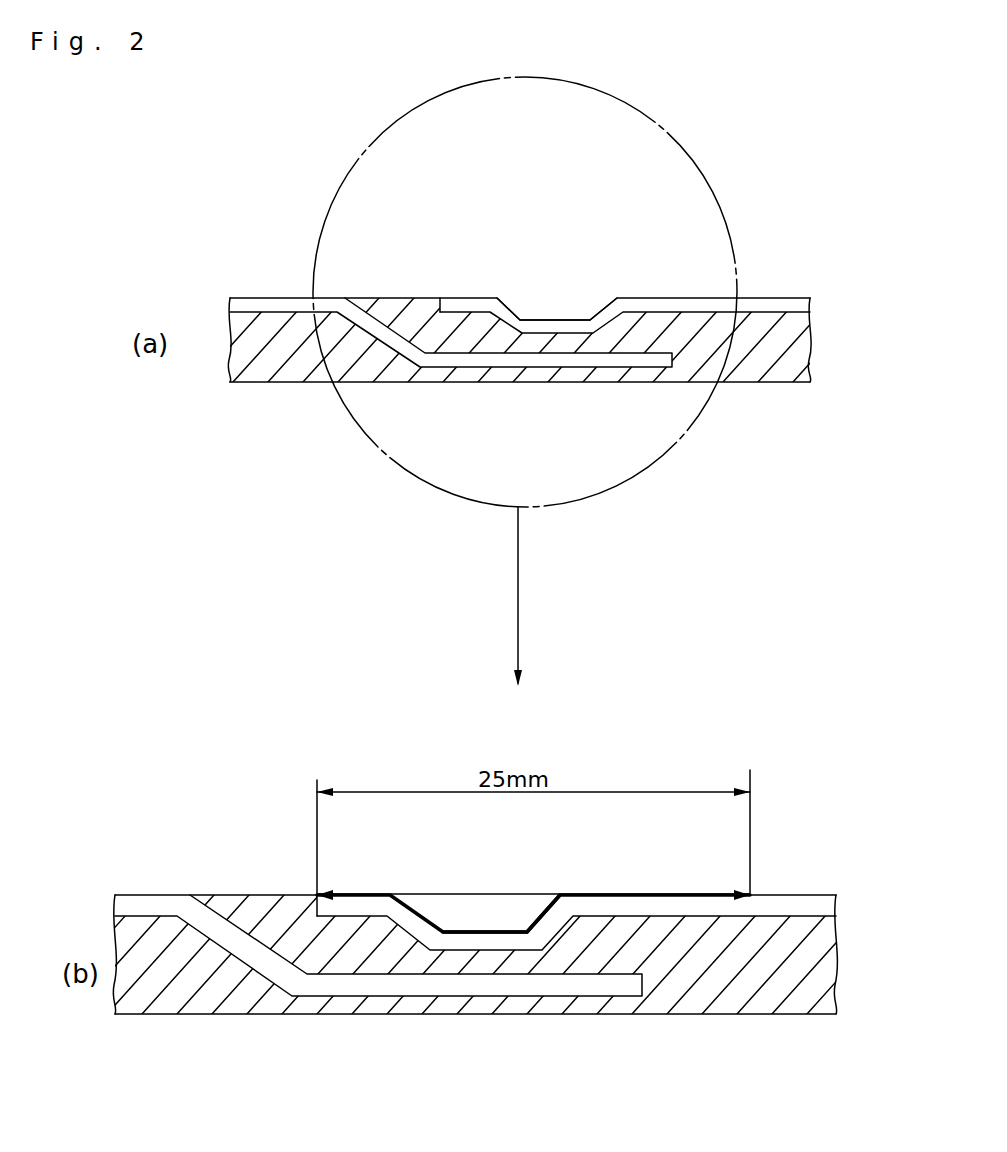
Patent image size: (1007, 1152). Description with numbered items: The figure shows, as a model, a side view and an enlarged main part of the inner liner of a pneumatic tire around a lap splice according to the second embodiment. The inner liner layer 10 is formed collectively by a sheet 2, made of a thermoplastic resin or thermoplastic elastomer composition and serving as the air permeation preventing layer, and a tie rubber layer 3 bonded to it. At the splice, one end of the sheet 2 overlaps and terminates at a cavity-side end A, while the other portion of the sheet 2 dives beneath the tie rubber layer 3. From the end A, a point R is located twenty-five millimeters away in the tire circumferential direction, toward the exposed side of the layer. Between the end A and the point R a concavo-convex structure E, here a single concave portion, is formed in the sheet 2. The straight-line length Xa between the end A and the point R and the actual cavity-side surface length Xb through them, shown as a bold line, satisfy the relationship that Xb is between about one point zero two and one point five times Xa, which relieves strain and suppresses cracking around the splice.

The sheet 2 is at (788, 303).
The tie rubber layer 3 is at (462, 385).
The inner liner layer 10 is at (397, 298).
The cavity-side end A is at (440, 298).
The concavo-convex structure E is at (570, 325).
The point R is at (752, 892).
The straight-line length Xa is at (474, 892).
The actual path length Xb is at (532, 914).